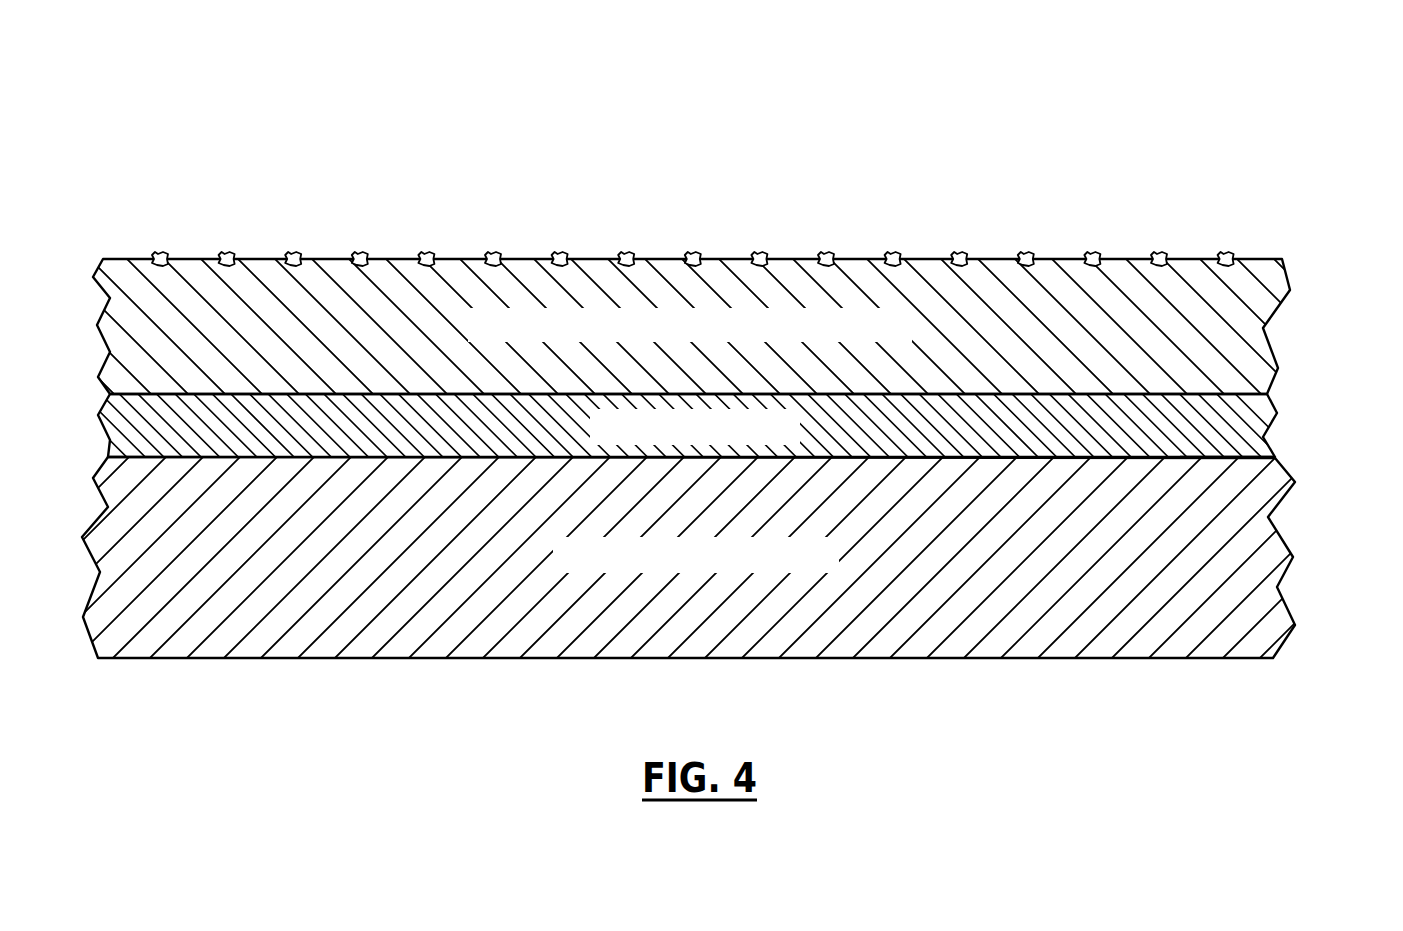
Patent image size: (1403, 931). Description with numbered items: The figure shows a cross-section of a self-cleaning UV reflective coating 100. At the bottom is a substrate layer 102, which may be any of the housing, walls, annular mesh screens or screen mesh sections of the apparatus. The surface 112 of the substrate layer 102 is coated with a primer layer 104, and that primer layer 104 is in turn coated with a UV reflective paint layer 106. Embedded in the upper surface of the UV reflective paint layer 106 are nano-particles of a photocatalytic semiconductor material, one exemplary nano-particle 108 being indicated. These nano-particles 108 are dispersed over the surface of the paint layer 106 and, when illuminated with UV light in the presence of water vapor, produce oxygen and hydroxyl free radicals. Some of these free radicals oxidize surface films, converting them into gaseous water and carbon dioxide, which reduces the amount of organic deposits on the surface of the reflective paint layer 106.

The self-cleaning UV reflective coating 100 is at (701, 360).
The substrate layer 102 is at (832, 574).
The primer layer 104 is at (790, 443).
The UV reflective paint layer 106 is at (905, 341).
The nano-particle 108 is at (1174, 250).
The surface 112 is at (1234, 449).